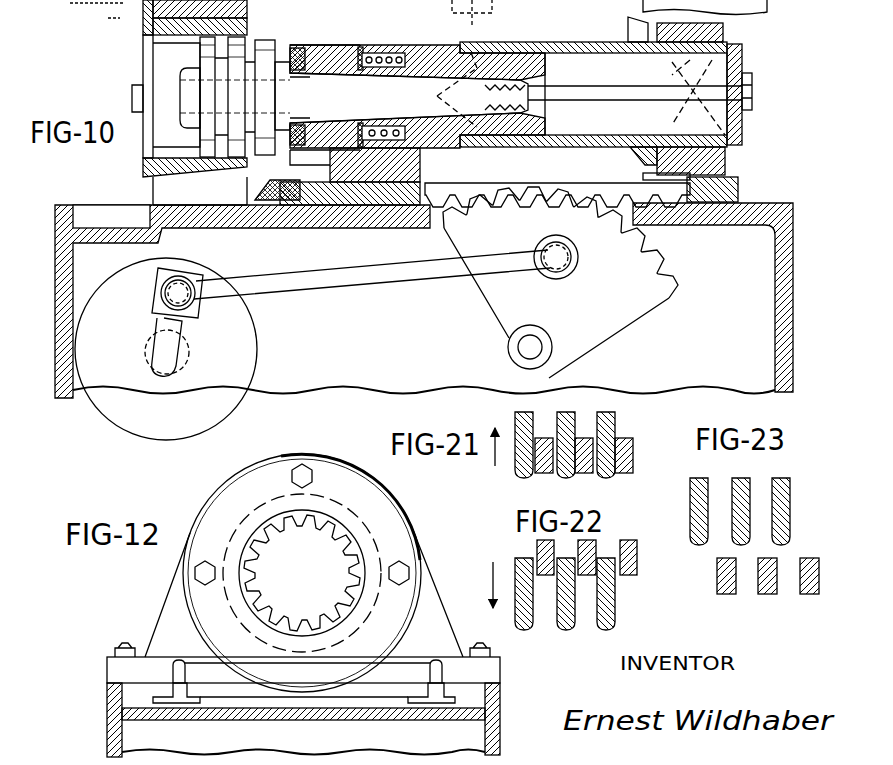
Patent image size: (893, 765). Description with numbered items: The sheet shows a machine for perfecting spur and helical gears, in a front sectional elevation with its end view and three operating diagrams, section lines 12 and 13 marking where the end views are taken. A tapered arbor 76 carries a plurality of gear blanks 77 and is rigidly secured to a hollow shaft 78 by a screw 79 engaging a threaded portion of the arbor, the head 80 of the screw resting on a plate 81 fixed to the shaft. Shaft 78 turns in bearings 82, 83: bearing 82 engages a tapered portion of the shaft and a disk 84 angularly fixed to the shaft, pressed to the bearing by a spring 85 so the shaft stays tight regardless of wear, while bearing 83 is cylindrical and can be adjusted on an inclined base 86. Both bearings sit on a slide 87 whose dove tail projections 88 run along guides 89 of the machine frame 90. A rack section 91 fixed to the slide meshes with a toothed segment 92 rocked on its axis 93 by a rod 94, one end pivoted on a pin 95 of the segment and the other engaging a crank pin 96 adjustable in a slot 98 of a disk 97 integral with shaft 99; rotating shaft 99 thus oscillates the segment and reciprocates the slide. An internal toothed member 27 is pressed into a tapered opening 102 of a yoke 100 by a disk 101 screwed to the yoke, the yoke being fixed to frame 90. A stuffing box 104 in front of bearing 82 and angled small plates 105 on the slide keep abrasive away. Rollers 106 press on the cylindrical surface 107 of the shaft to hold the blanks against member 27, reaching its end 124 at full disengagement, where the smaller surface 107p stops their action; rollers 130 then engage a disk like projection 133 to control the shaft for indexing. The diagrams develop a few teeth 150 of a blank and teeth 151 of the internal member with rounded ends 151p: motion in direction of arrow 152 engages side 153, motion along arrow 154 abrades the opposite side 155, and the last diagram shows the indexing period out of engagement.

In FIG. 10, the section line 12— 12 is at (128, 18).
In FIG. 10, the section line 13— 13 is at (490, 28).
In FIG. 10, the internal toothed member 27 is at (145, 167).
In FIG. 12, the internal toothed member 27 is at (262, 537).
In FIG. 10, the tapered arbor 76 is at (401, 96).
In FIG. 10, the gear blanks 77 is at (258, 66).
In FIG. 10, the hollow shaft 78 is at (548, 43).
In FIG. 10, the screw 79 is at (522, 91).
In FIG. 10, the head of screw 80 is at (753, 92).
In FIG. 10, the plate 81 is at (735, 125).
In FIG. 10, the bearing 82 is at (330, 148).
In FIG. 10, the bearing 83 is at (726, 160).
In FIG. 10, the disk 84 is at (361, 125).
In FIG. 10, the spring 85 is at (384, 128).
In FIG. 10, the inclined base 86 is at (650, 176).
In FIG. 10, the slide 87 is at (740, 188).
In FIG. 12, the slide 87 is at (395, 672).
In FIG. 12, the dove tail projections 88 is at (183, 688).
In FIG. 12, the guides 89 is at (422, 693).
In FIG. 10, the machine frame 90 is at (63, 207).
In FIG. 12, the machine frame 90 is at (500, 706).
In FIG. 10, the rack section 91 is at (518, 190).
In FIG. 10, the toothed segment 92 is at (636, 280).
In FIG. 10, the axis 93 is at (531, 347).
In FIG. 10, the rod 94 is at (320, 281).
In FIG. 10, the pin 95 is at (560, 259).
In FIG. 10, the crank pin 96 is at (178, 293).
In FIG. 10, the disk 97 is at (113, 412).
In FIG. 10, the slot 98 is at (186, 329).
In FIG. 10, the shaft 99 is at (168, 352).
In FIG. 10, the yoke 100 is at (170, 192).
In FIG. 12, the yoke 100 is at (175, 606).
In FIG. 10, the disk 101 is at (150, 63).
In FIG. 12, the disk 101 is at (258, 484).
In FIG. 10, the tapered opening 102 is at (246, 10).
In FIG. 12, the tapered opening 102 is at (333, 500).
In FIG. 10, the stuffing box 104 is at (300, 50).
In FIG. 10, the small plates 105 is at (265, 192).
In FIG. 10, the rollers 106 is at (446, 92).
In FIG. 10, the cylindrical surface 107 is at (504, 46).
In FIG. 10, the surface of smaller diameter 107p is at (374, 34).
In FIG. 10, the end of cylindrical surface 124 is at (440, 48).
In FIG. 10, the rollers 130 is at (745, 62).
In FIG. 10, the disk like projection 133 is at (630, 30).
In FIG. 21, the teeth of spur gear blank 150 is at (625, 442).
In FIG. 22, the teeth of spur gear blank 150 is at (585, 553).
In FIG. 23, the teeth of spur gear blank 150 is at (770, 583).
In FIG. 21, the teeth of internal member 151 is at (560, 426).
In FIG. 22, the teeth of internal member 151 is at (603, 610).
In FIG. 23, the teeth of internal member 151 is at (743, 510).
In FIG. 21, the rounded ends 151p is at (612, 474).
In FIG. 22, the rounded ends 151p is at (615, 612).
In FIG. 23, the rounded ends 151p is at (790, 540).
In FIG. 21, the arrow 152 is at (491, 448).
In FIG. 21, the side of teeth 153 is at (610, 458).
In FIG. 22, the arrow 154 is at (490, 575).
In FIG. 22, the opposite side of teeth 155 is at (588, 553).